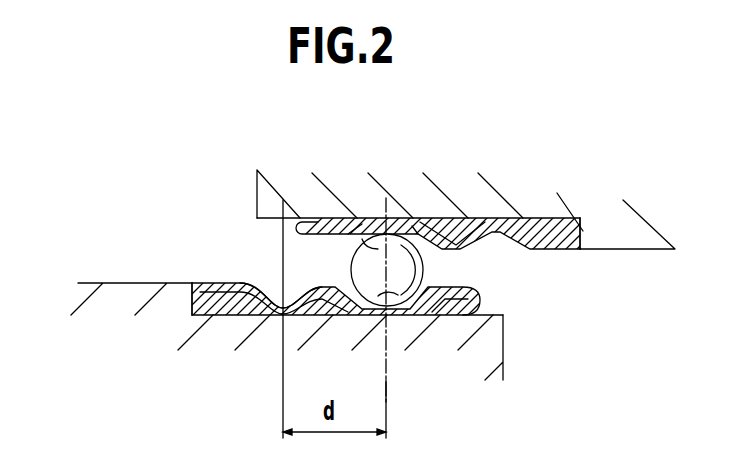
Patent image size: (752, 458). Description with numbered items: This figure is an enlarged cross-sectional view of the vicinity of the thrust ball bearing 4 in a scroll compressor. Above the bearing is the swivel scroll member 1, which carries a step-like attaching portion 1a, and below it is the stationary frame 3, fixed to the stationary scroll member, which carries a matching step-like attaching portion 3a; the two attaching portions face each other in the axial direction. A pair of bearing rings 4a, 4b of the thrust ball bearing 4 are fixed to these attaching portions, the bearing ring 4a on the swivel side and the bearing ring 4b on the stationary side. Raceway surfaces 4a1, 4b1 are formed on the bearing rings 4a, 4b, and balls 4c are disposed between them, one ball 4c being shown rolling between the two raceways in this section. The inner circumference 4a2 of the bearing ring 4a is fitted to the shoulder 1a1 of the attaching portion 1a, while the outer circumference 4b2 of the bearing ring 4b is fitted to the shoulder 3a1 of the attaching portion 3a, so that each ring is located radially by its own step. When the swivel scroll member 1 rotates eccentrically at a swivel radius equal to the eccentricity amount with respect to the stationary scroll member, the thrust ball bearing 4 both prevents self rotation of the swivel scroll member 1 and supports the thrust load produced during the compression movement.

The swivel scroll member 1 is at (671, 250).
The attaching portion 1a is at (556, 219).
The shoulder 1a1 is at (576, 250).
The stationary frame 3 is at (95, 283).
The attaching portion 3a is at (216, 316).
The shoulder 3a1 is at (197, 279).
The thrust ball bearing 4 is at (164, 216).
The bearing ring 4a is at (320, 238).
The raceway surface 4a1 is at (356, 240).
The inner circumference 4a2 is at (583, 236).
The bearing ring 4b is at (464, 292).
The raceway surface 4b1 is at (424, 313).
The outer circumference 4b2 is at (192, 297).
The ball 4c is at (423, 236).